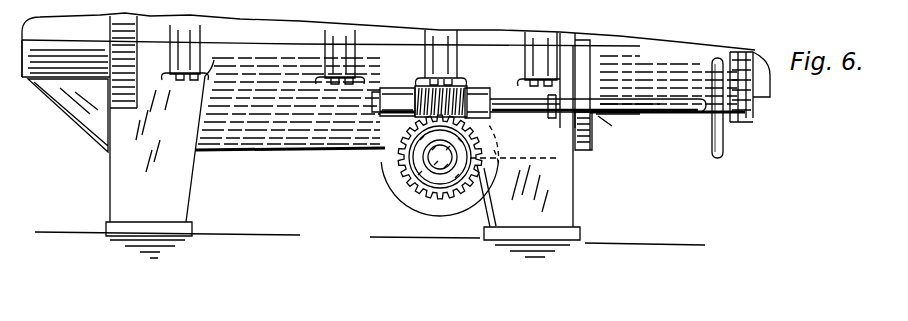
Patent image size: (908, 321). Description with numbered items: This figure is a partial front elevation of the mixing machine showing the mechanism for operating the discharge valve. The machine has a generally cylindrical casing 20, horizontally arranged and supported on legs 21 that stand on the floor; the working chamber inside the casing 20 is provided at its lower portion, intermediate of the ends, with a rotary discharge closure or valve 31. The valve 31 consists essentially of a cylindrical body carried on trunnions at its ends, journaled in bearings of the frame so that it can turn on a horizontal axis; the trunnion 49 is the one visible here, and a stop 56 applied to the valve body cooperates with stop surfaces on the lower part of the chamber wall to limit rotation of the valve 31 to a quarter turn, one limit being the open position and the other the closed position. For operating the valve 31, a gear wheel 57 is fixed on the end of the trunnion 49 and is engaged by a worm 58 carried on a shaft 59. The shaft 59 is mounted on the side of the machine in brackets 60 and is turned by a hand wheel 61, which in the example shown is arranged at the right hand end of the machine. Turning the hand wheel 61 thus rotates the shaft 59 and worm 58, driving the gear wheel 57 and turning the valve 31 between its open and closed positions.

The casing 20 is at (396, 82).
The legs 21 is at (130, 199).
The rotary discharge valve 31 is at (437, 162).
The trunnion 49 is at (432, 172).
The stop 56 is at (444, 220).
The gear wheel 57 is at (401, 173).
The worm 58 is at (412, 108).
The shaft 59 is at (655, 106).
The brackets 60 is at (377, 95).
The hand wheel 61 is at (723, 142).